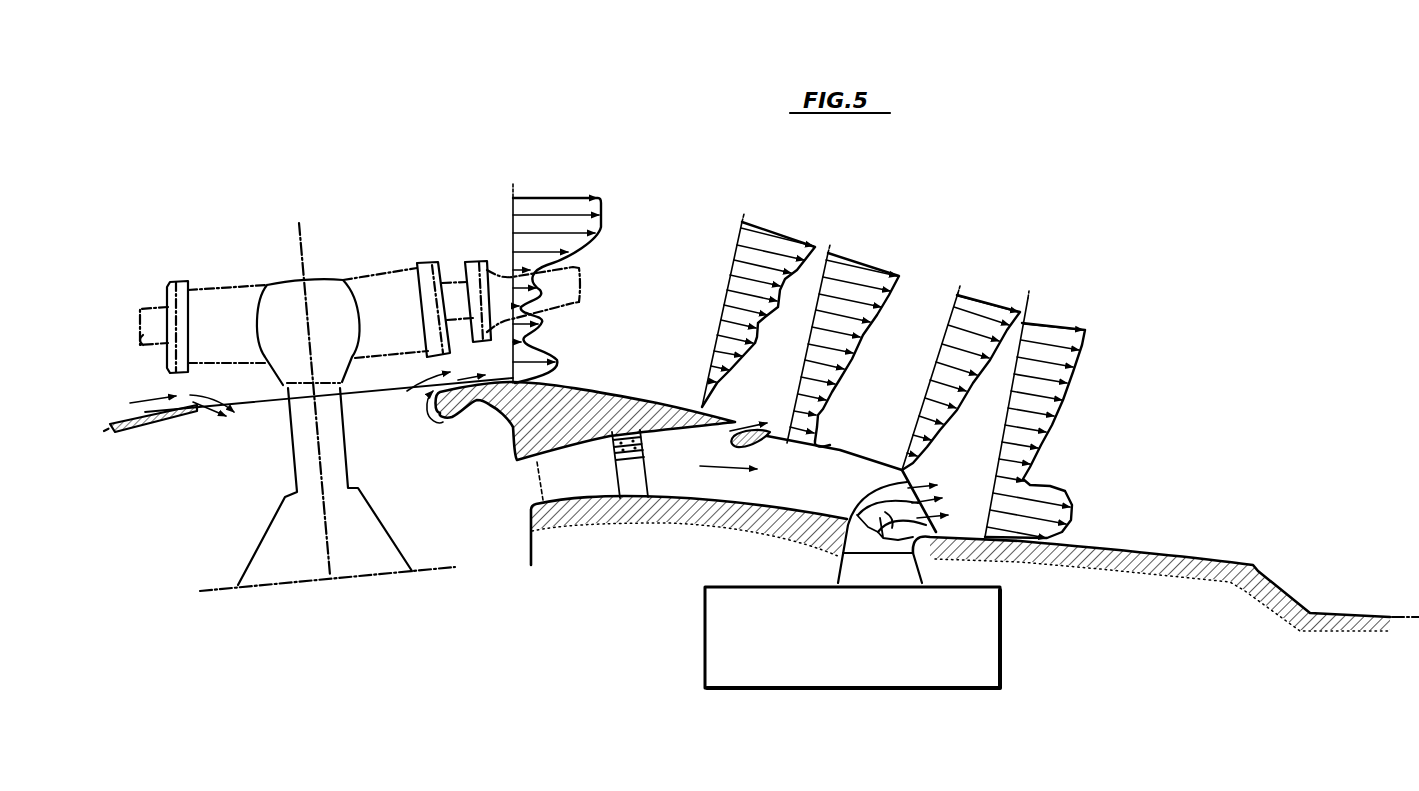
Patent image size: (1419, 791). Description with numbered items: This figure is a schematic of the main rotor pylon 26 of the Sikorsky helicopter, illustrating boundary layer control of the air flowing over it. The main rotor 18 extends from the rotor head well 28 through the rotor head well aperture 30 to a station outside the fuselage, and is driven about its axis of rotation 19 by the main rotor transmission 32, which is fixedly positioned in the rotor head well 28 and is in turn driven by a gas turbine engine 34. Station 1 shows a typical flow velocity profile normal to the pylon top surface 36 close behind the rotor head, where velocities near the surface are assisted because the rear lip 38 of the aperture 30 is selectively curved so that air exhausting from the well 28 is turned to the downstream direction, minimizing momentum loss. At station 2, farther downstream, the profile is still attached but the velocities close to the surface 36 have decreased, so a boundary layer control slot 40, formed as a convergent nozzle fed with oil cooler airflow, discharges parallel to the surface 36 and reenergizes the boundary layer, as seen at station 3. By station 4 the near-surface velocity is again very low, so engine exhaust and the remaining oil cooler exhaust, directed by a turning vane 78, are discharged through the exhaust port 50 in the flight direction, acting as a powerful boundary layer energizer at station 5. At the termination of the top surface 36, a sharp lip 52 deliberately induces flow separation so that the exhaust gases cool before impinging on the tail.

The station 1 is at (554, 273).
The station 2 is at (758, 301).
The station 3 is at (843, 338).
The station 4 is at (961, 366).
The station 5 is at (1035, 404).
The main rotor 18 is at (359, 258).
The axis of rotation 19 is at (297, 253).
The main rotor pylon 26 is at (862, 436).
The rotor head well 28 is at (452, 541).
The rotor head well aperture 30 is at (248, 408).
The main rotor transmission 32 is at (238, 586).
The gas turbine engine 34 is at (860, 643).
The main rotor pylon top surface 36 is at (600, 390).
The rear lip 38 is at (435, 425).
The boundary layer control slot 40 is at (742, 419).
The exhaust port 50 is at (917, 466).
The sharp lip 52 is at (1260, 572).
The turning vane 78 is at (888, 514).